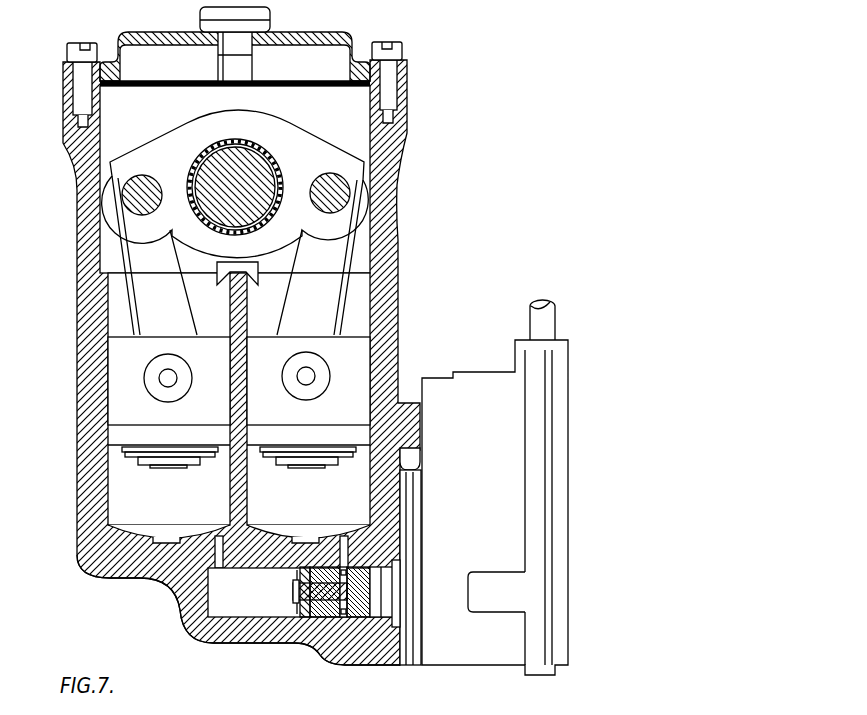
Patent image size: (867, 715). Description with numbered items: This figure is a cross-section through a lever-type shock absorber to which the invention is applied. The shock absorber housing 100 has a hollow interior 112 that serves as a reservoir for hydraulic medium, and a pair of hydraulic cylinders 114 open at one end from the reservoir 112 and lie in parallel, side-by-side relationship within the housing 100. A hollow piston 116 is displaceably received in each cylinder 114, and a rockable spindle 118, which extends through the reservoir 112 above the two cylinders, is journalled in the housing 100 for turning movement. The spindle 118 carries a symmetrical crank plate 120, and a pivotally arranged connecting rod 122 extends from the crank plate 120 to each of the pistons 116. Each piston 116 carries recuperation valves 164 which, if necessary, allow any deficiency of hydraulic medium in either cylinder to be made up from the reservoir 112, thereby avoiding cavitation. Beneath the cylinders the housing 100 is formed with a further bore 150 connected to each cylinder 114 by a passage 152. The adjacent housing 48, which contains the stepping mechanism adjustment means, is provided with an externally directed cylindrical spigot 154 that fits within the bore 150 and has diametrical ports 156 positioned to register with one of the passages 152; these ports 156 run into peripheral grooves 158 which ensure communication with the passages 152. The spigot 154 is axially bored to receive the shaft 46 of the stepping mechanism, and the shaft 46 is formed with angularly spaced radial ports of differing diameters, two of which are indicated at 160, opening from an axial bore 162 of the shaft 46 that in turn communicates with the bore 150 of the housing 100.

The shaft 46 is at (300, 605).
The housing 48 is at (517, 532).
The housing 100 is at (83, 310).
The hollow interior 112 is at (333, 118).
The hydraulic cylinders 114 is at (115, 493).
The hollow piston 116 is at (239, 391).
The rockable spindle 118 is at (233, 157).
The crank plate 120 is at (160, 142).
The connecting rod 122 is at (293, 312).
The bore 150 is at (213, 620).
The passage 152 is at (223, 548).
The cylindrical spigot 154 is at (357, 613).
The diametrical ports 156 is at (363, 600).
The peripheral grooves 158 is at (372, 566).
The radial ports 160 is at (328, 613).
The axial bore 162 is at (293, 593).
The recuperation valves 164 is at (170, 470).